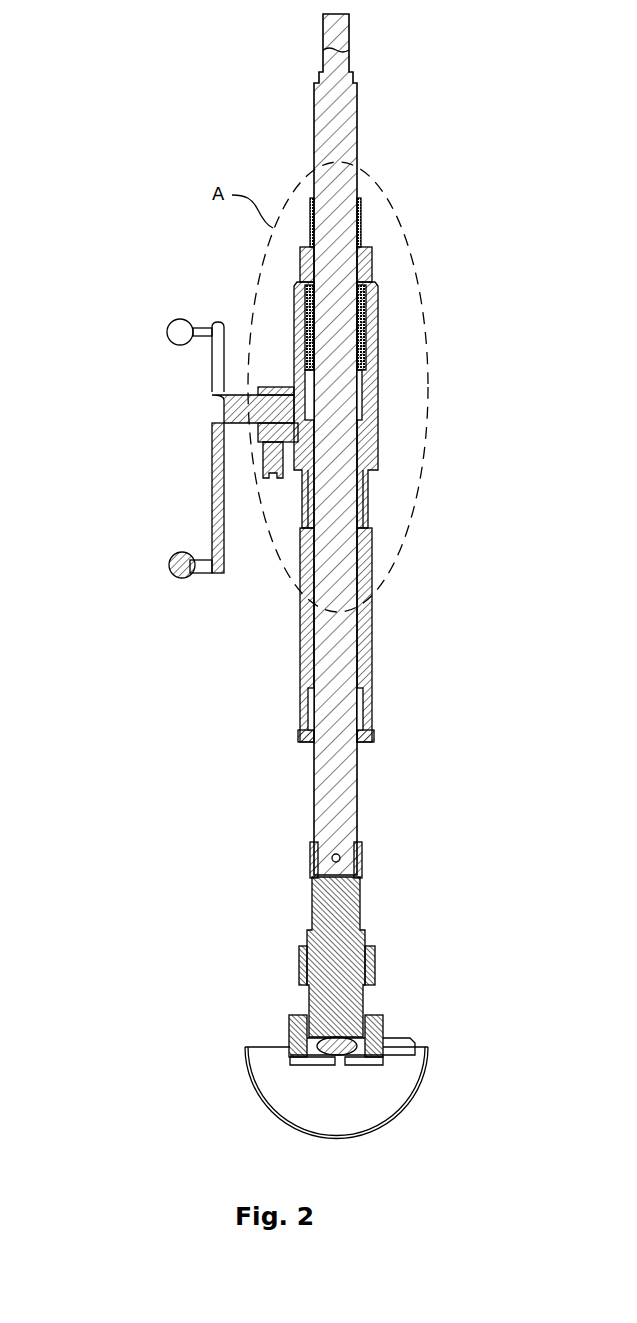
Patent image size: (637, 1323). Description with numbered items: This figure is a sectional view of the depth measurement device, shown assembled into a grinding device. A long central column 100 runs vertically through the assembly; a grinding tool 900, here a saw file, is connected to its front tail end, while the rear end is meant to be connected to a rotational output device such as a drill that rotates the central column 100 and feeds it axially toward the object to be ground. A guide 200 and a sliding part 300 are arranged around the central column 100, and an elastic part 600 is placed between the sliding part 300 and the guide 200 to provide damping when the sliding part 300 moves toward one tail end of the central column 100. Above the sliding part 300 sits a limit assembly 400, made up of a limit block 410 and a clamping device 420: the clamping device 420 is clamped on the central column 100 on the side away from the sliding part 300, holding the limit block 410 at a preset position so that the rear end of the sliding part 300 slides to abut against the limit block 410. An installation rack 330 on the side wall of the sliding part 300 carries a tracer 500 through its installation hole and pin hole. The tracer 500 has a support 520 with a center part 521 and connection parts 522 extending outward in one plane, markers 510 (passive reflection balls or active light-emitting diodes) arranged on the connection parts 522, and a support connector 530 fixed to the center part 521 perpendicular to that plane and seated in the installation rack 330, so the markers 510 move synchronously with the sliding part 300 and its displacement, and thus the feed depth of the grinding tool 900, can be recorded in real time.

The central column 100 is at (340, 785).
The guide 200 is at (377, 642).
The sliding part 300 is at (377, 415).
The installation rack 330 is at (258, 392).
The limit assembly 400 is at (413, 240).
The limit block 410 is at (370, 272).
The clamping device 420 is at (363, 246).
The tracer 500 is at (155, 459).
The marker 510 is at (170, 568).
The support 520 is at (181, 484).
The center part 521 is at (212, 430).
The connection part 522 is at (212, 490).
The support connector 530 is at (215, 412).
The elastic part 600 is at (365, 327).
The grinding tool 900 is at (412, 1104).